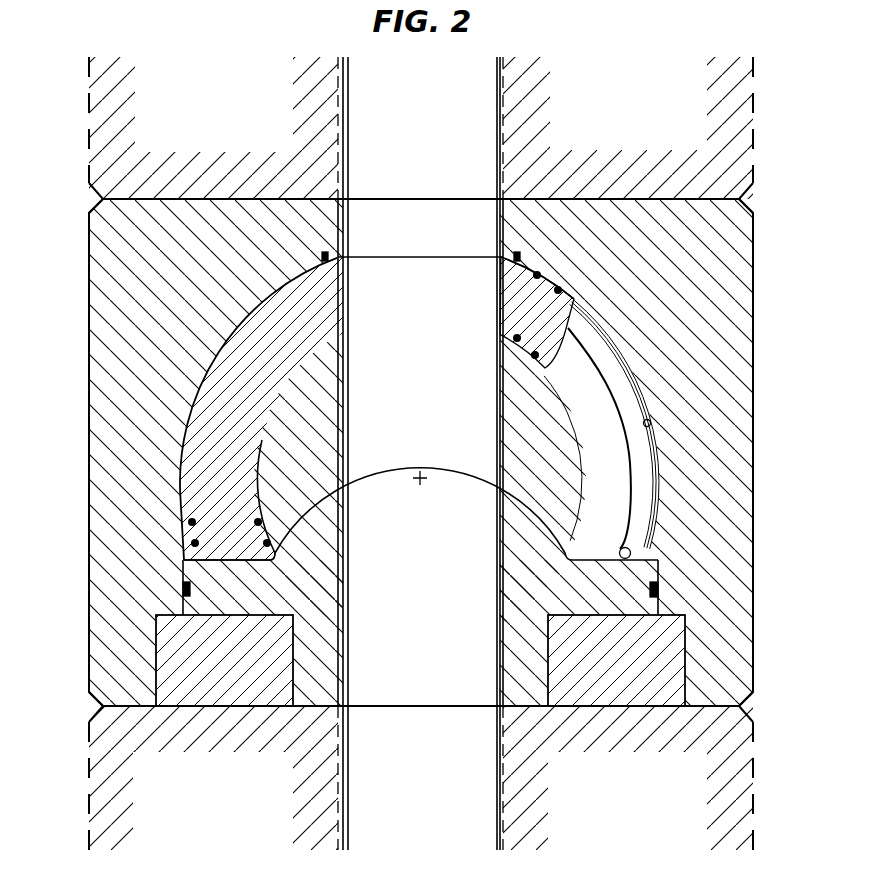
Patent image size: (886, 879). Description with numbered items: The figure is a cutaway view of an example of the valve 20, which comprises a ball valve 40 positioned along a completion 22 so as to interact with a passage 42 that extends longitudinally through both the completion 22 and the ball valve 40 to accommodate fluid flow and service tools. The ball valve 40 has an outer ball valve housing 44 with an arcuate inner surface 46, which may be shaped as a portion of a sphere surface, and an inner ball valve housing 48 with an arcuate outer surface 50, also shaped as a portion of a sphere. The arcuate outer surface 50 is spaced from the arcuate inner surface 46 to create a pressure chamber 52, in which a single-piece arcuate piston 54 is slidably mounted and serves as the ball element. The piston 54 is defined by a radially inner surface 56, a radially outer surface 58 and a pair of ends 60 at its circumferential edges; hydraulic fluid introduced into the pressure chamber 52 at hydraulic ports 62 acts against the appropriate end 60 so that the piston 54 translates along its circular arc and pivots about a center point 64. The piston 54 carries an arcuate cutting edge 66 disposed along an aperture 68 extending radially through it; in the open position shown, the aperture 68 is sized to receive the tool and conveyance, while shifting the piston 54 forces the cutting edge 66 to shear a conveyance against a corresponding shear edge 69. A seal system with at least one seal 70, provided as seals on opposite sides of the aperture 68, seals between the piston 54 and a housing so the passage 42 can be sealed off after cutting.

The valve 20 is at (72, 272).
The completion 22 is at (770, 120).
The ball valve 40 is at (70, 317).
The passage 42 is at (407, 588).
The outer ball valve housing 44 is at (691, 258).
The arcuate inner surface 46 is at (651, 423).
The inner ball valve housing 48 is at (530, 476).
The arcuate outer surface 50 is at (252, 474).
The pressure chamber 52 is at (200, 572).
The piston 54 is at (227, 399).
The radially inner surface 56 is at (333, 365).
The radially outer surface 58 is at (240, 323).
The ends 60 is at (570, 315).
The hydraulic ports 62 is at (633, 552).
The center point 64 is at (421, 474).
The cutting edge 66 is at (340, 258).
The aperture 68 is at (500, 292).
The shear edge 69 is at (500, 251).
The seal 70 is at (558, 290).